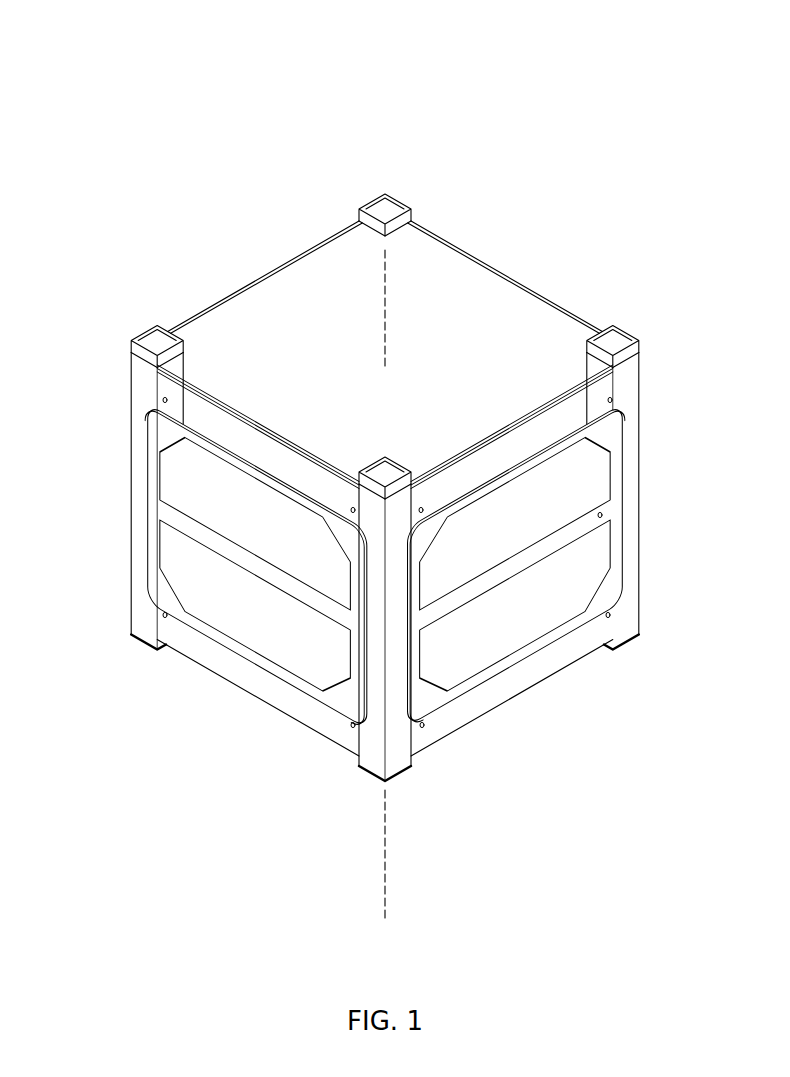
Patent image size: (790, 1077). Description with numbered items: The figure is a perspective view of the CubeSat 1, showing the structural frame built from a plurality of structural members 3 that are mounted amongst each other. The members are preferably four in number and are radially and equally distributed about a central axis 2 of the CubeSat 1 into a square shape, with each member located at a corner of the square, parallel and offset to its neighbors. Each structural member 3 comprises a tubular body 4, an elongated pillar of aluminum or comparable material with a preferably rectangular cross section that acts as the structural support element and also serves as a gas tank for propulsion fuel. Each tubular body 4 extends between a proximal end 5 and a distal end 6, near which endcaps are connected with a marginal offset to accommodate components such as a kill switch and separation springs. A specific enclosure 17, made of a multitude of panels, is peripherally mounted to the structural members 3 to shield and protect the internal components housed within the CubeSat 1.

The CubeSat 1 is at (243, 72).
The central axis 2 is at (389, 302).
The structural members 3 is at (378, 181).
The tubular body 4 is at (410, 214).
The proximal end 5 is at (117, 628).
The distal end 6 is at (120, 352).
The specific enclosure 17 is at (233, 667).